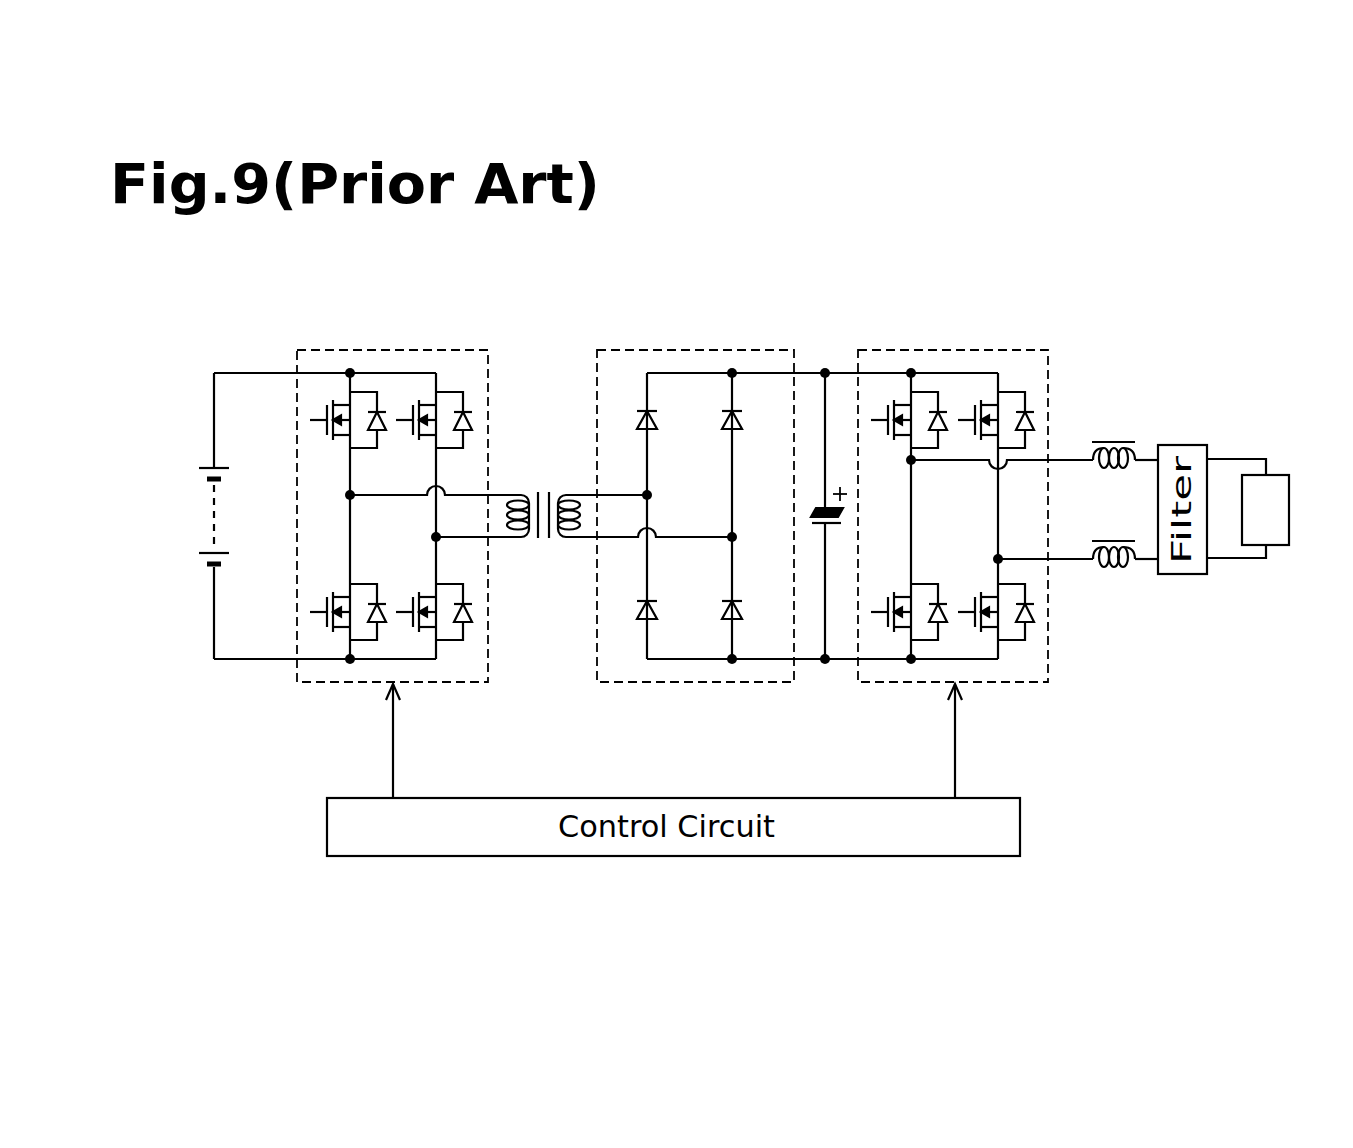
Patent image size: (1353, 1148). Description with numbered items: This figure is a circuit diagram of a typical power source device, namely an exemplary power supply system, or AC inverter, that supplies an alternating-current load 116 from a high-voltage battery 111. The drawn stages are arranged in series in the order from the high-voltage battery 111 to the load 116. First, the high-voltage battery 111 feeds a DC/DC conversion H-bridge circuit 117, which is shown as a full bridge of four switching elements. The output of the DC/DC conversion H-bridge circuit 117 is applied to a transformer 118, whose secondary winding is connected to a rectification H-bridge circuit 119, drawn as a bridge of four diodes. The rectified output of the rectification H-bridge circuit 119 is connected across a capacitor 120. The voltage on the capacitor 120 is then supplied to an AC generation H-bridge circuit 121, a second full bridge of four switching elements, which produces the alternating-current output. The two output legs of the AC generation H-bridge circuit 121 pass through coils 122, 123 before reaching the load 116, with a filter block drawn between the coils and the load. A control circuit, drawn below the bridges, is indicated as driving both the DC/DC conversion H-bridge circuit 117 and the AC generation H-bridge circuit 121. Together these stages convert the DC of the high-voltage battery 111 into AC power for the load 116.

The high-voltage battery 111 is at (209, 468).
The alternating-current load 116 is at (1290, 532).
The DC/DC conversion H-bridge circuit 117 is at (419, 348).
The transformer 118 is at (538, 474).
The rectification H-bridge circuit 119 is at (714, 348).
The capacitor 120 is at (817, 508).
The AC generation H-bridge circuit 121 is at (981, 348).
The coil 122 is at (1114, 470).
The coil 123 is at (1113, 569).